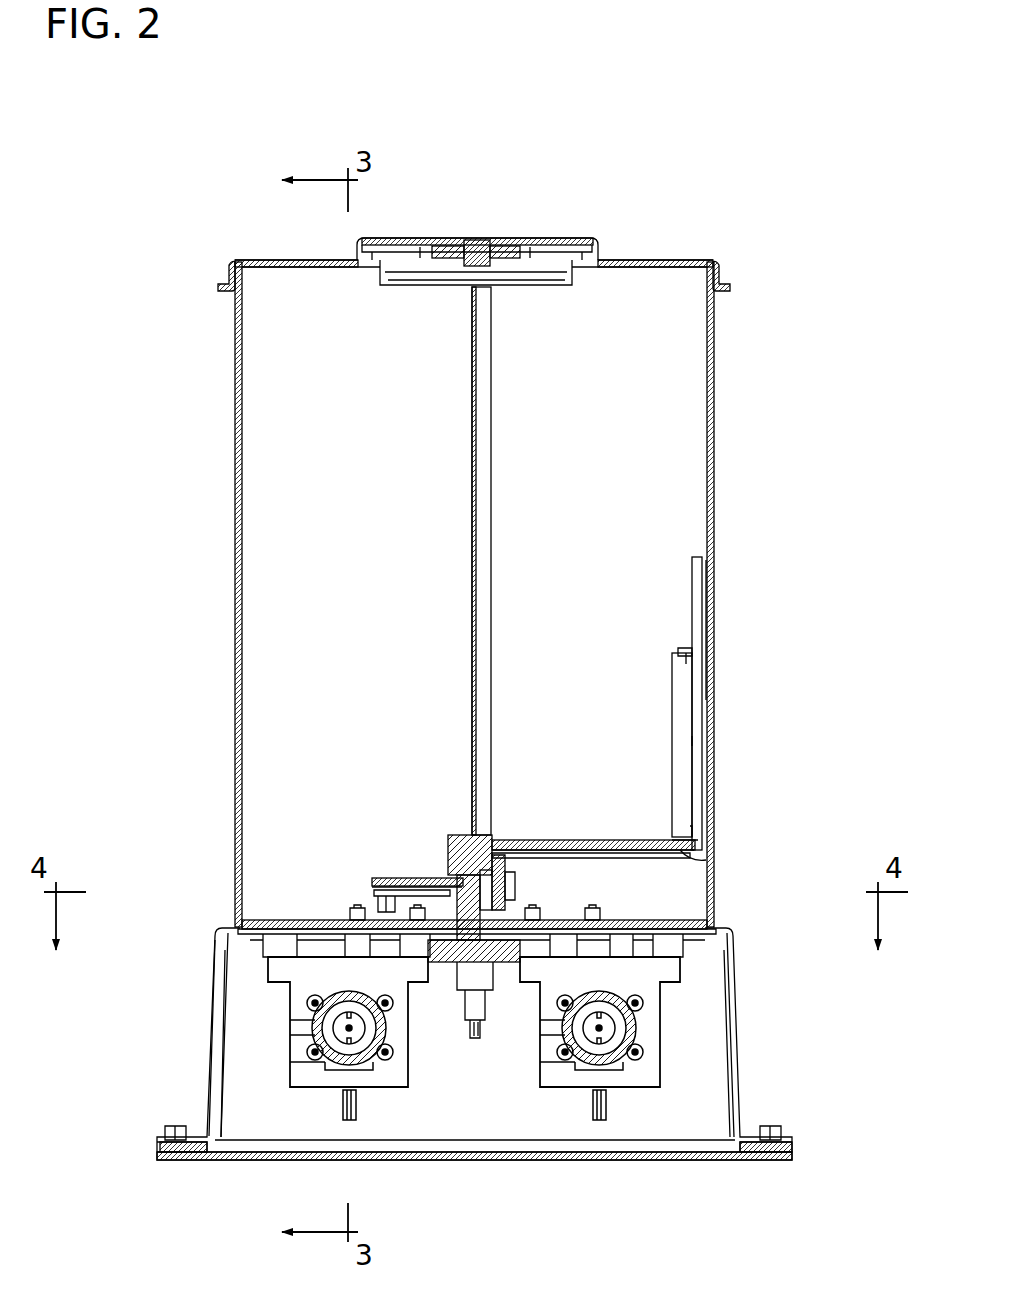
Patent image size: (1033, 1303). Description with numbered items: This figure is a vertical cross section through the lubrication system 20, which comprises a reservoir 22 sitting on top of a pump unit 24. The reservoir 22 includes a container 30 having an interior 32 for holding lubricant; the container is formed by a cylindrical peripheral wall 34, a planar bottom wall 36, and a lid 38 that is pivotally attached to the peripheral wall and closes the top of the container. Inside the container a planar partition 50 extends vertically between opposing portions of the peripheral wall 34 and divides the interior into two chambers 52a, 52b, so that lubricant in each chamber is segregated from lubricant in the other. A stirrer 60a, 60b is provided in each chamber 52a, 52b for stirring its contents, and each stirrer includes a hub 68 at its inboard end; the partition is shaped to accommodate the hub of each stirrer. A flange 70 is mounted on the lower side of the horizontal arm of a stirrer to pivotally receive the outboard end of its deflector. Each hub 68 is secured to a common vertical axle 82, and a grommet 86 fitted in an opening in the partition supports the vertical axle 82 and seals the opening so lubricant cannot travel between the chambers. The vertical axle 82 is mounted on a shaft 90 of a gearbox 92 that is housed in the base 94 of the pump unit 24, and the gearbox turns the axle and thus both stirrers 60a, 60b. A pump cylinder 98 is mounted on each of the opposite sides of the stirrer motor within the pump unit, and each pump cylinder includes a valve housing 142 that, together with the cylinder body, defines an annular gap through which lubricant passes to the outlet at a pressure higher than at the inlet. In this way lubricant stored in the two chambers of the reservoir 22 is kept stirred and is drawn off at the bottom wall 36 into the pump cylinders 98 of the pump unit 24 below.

The lubrication system 20 is at (760, 112).
The reservoir 22 is at (722, 310).
The pump unit 24 is at (745, 1090).
The container 30 is at (240, 334).
The interior 32 is at (690, 366).
The peripheral wall 34 is at (712, 600).
The bottom wall 36 is at (705, 906).
The lid 38 is at (655, 258).
The partition 50 is at (471, 612).
The chamber 52a is at (366, 505).
The chamber 52b is at (596, 505).
The stirrer 60a is at (376, 872).
The stirrer 60b is at (688, 584).
The hub 68 is at (448, 852).
The flange 70 is at (718, 860).
The vertical axle 82 is at (510, 852).
The grommet 86 is at (493, 862).
The shaft 90 is at (520, 906).
The gearbox 92 is at (447, 975).
The base 94 is at (220, 976).
The pump cylinder 98 is at (330, 1024).
The valve housing 142 is at (660, 1002).